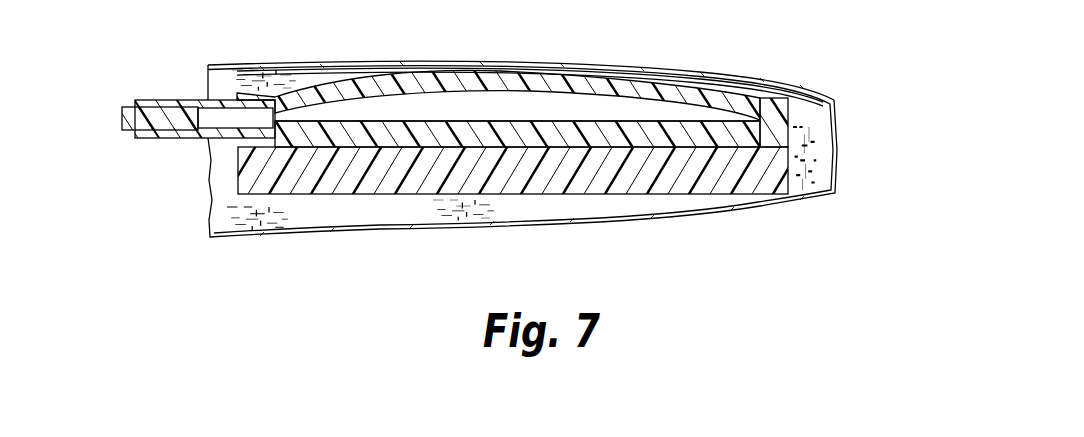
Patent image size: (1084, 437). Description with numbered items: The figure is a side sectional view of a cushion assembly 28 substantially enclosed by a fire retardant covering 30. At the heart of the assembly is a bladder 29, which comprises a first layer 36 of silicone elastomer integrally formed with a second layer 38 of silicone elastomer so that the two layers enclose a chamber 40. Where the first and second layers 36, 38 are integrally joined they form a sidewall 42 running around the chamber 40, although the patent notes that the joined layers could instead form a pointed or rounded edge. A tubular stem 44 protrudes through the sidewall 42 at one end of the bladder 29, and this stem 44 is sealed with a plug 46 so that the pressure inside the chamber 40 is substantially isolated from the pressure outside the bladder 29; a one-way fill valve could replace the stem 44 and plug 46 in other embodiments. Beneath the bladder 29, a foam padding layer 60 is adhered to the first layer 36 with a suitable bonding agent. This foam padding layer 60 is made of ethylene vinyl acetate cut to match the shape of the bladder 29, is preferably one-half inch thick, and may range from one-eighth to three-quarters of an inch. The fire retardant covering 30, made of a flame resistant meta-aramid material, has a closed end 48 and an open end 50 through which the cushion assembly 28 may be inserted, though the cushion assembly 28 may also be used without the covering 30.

The cushion assembly 28 is at (222, 219).
The bladder 29 is at (325, 81).
The fire retardant covering 30 is at (256, 65).
The first layer 36 is at (590, 124).
The second layer 38 is at (417, 91).
The chamber 40 is at (518, 104).
The sidewall 42 is at (789, 108).
The tubular stem 44 is at (178, 101).
The plug 46 is at (122, 112).
The closed end 48 is at (848, 176).
The open end 50 is at (165, 209).
The foam padding layer 60 is at (524, 195).